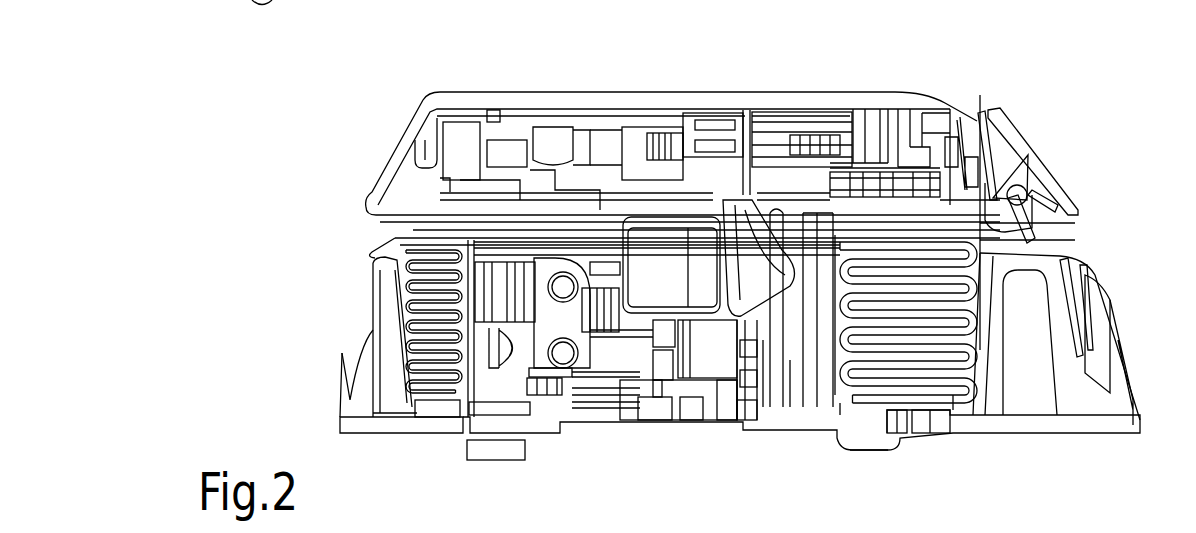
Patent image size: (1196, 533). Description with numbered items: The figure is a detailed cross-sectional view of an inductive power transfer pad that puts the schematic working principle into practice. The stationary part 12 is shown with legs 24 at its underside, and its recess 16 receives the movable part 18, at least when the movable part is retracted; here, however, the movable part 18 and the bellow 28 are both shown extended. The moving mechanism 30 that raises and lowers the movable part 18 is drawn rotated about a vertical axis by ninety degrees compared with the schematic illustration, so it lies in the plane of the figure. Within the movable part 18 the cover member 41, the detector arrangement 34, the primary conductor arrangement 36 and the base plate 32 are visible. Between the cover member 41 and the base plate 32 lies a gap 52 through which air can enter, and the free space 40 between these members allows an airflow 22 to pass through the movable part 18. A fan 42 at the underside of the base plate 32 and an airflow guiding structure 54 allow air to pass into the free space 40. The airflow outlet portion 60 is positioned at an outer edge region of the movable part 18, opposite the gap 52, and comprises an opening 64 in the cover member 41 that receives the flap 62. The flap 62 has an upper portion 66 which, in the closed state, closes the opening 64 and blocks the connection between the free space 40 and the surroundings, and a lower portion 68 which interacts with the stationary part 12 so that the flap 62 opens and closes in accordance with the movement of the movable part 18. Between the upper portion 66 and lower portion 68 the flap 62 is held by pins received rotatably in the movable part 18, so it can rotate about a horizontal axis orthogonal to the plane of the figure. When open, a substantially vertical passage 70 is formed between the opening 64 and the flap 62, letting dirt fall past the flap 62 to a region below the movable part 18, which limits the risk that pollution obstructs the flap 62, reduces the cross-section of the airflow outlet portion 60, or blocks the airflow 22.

The stationary part 12 is at (383, 335).
The recess 16 is at (376, 244).
The movable part 18 is at (352, 153).
The airflow 22 is at (738, 72).
The legs 24 is at (493, 462).
The bellow 28 is at (417, 398).
The moving mechanism 30 is at (712, 357).
The base plate 32 is at (398, 200).
The detector arrangement 34 is at (632, 125).
The primary conductor arrangement 36 is at (472, 121).
The free space 40 is at (1055, 262).
The cover member 41 is at (448, 96).
The fan 42 is at (676, 277).
The gap 52 is at (372, 217).
The airflow guiding structure 54 is at (746, 200).
The airflow outlet portion 60 is at (966, 72).
The flap 62 is at (1033, 168).
The opening 64 is at (1030, 140).
The upper portion 66 is at (1003, 123).
The lower portion 68 is at (995, 232).
The passage 70 is at (983, 107).